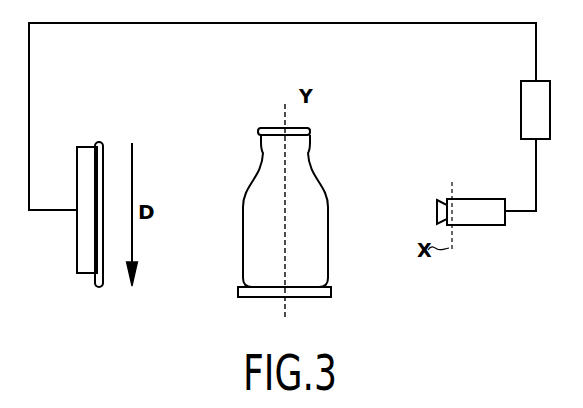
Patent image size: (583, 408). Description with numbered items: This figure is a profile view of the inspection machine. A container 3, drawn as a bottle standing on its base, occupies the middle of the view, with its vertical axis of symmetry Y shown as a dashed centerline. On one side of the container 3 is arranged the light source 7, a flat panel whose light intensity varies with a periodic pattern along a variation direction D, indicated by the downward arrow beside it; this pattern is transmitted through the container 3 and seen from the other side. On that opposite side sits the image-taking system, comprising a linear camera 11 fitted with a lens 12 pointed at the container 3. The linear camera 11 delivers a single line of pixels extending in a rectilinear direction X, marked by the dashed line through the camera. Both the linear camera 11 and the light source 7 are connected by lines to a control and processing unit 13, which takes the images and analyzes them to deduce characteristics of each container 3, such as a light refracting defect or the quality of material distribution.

The container 3 is at (330, 240).
The light source 7 is at (80, 243).
The linear camera 11 is at (490, 223).
The lens 12 is at (443, 197).
The control and processing unit 13 is at (528, 103).